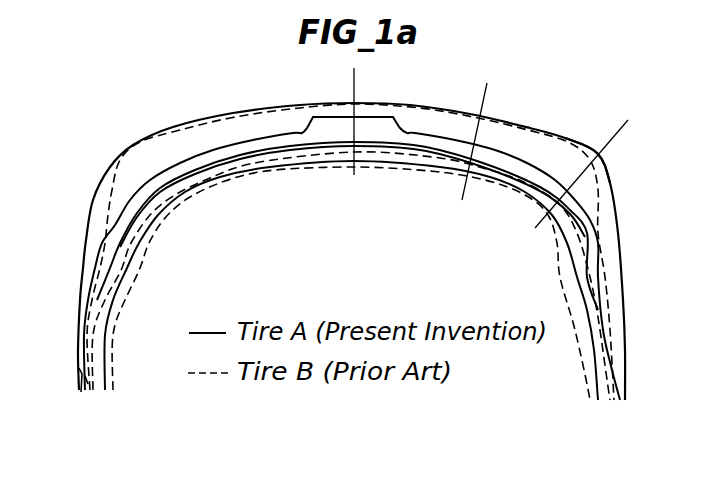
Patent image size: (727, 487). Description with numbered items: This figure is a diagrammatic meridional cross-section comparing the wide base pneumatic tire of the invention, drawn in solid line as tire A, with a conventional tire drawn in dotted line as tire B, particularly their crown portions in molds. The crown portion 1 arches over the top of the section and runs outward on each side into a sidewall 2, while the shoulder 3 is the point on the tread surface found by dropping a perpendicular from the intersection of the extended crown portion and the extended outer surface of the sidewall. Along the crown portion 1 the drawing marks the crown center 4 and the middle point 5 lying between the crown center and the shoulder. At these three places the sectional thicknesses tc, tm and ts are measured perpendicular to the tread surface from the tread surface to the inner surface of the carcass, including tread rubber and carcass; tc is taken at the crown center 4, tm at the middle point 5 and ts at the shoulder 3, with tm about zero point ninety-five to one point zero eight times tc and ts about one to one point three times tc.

The crown portion 1 is at (175, 143).
The sidewall 2 is at (78, 351).
The shoulder 3 is at (597, 153).
The crown center 4 is at (355, 102).
The middle point 5 is at (480, 116).
The sectional thickness of the crown center tc is at (353, 137).
The thickness of the middle point tm is at (468, 156).
The thickness of the shoulder ts is at (568, 186).